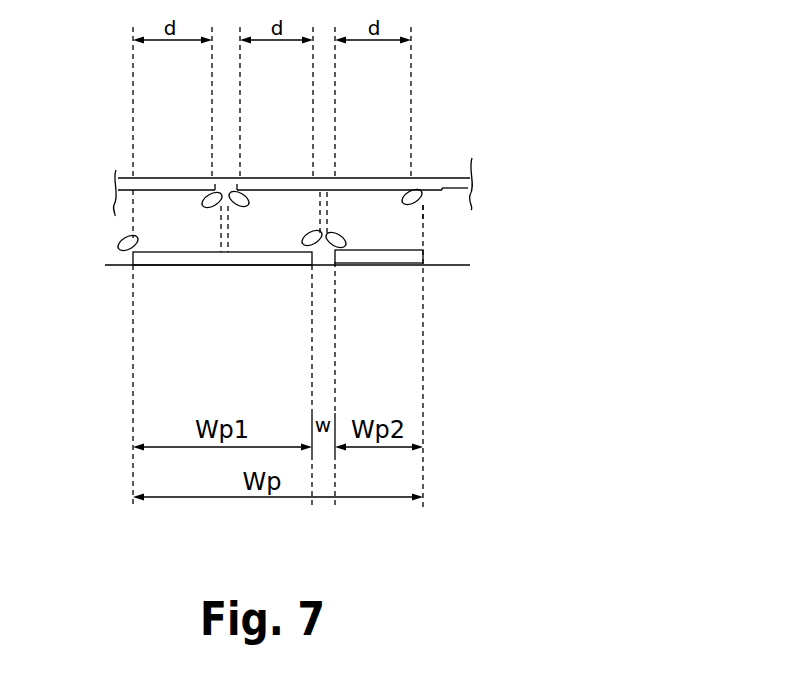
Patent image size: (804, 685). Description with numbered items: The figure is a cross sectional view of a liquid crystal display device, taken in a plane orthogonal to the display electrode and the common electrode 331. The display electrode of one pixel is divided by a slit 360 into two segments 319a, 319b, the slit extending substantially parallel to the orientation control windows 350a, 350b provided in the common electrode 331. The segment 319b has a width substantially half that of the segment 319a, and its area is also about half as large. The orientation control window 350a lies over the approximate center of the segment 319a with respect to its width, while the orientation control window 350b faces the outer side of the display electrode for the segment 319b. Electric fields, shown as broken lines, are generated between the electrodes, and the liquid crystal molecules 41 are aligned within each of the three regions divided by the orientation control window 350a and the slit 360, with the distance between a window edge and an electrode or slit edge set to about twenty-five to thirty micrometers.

The common electrode 331 is at (153, 178).
The orientation control window 350a is at (226, 178).
The orientation control window 350b is at (418, 178).
The liquid crystal molecules 41 is at (120, 243).
The slit 360 is at (337, 255).
The segment 319a is at (195, 268).
The segment 319b is at (388, 266).